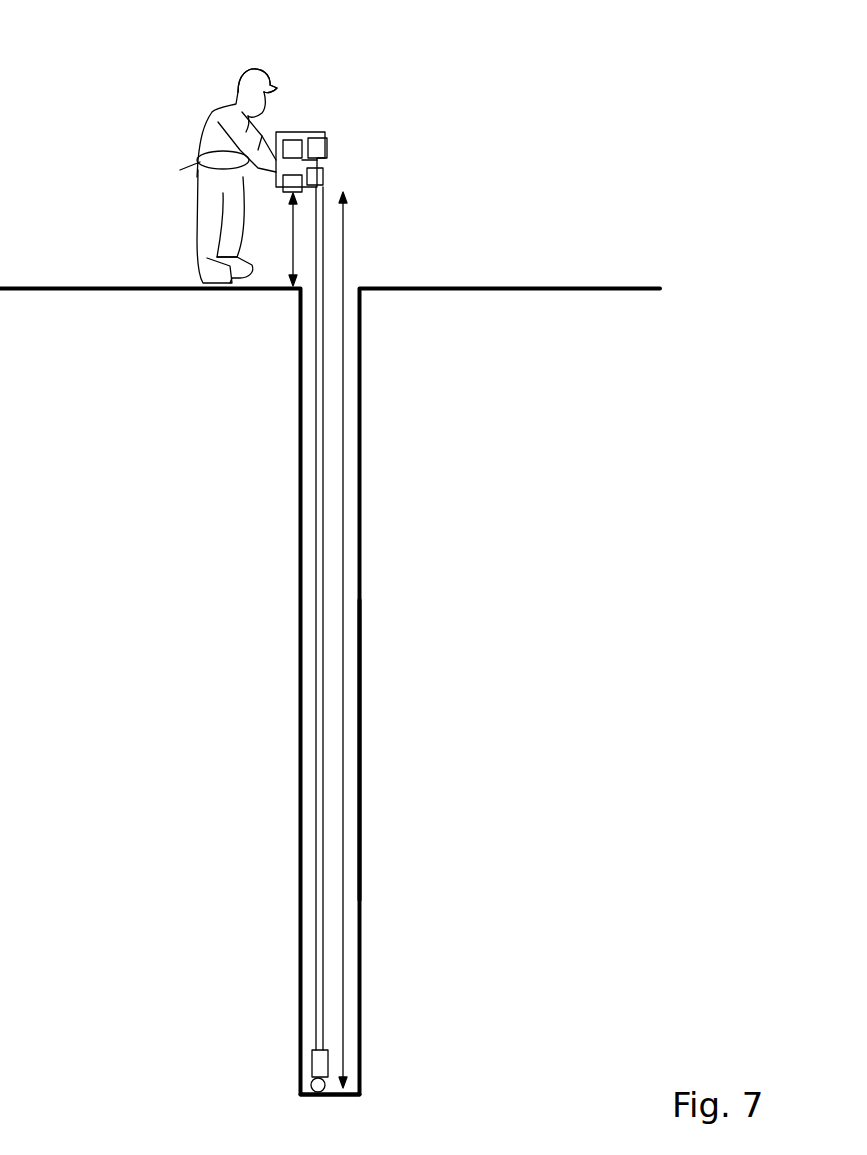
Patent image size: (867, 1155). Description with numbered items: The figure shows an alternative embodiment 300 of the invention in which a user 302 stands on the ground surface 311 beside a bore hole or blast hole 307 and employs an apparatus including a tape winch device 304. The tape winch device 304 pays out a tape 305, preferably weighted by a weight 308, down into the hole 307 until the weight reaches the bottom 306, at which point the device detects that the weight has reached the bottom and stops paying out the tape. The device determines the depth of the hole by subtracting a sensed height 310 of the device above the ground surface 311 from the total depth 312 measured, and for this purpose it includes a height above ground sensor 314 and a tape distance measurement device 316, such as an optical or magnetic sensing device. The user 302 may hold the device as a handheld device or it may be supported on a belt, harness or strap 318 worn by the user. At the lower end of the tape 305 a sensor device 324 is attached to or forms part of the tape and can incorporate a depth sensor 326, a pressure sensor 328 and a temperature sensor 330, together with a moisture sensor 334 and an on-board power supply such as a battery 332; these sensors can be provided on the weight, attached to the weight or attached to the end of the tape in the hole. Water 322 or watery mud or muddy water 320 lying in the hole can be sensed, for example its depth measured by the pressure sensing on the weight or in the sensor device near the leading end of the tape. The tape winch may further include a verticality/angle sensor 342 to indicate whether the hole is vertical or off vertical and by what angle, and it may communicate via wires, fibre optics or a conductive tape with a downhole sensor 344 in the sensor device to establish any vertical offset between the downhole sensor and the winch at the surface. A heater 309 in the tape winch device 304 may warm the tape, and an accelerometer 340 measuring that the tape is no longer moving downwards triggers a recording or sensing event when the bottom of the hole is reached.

The embodiment 300 is at (193, 140).
The user 302 is at (297, 105).
The tape winch device 304 is at (327, 160).
The tape 305 is at (320, 473).
The bottom 306 is at (358, 1087).
The bore hole or blast hole 307 is at (360, 763).
The weight 308 is at (327, 1080).
The heater 309 is at (300, 132).
The sensed height 310 is at (345, 210).
The ground surface 311 is at (287, 132).
The total depth 312 is at (297, 230).
The height above ground sensor 314 is at (200, 160).
The tape distance measurement device 316 is at (327, 178).
The belt, harness or strap 318 is at (227, 100).
The watery mud or muddy water 320 is at (300, 683).
The water 322 is at (310, 625).
The sensor device 324 is at (312, 1055).
The depth sensor 326 is at (330, 1058).
The pressure sensor 328 is at (330, 1060).
The temperature sensor 330 is at (333, 1063).
The battery 332 is at (330, 1070).
The moisture sensor 334 is at (328, 1050).
The accelerometer 340 is at (310, 1067).
The verticality/angle sensor 342 is at (327, 148).
The sensor 344 is at (312, 1060).